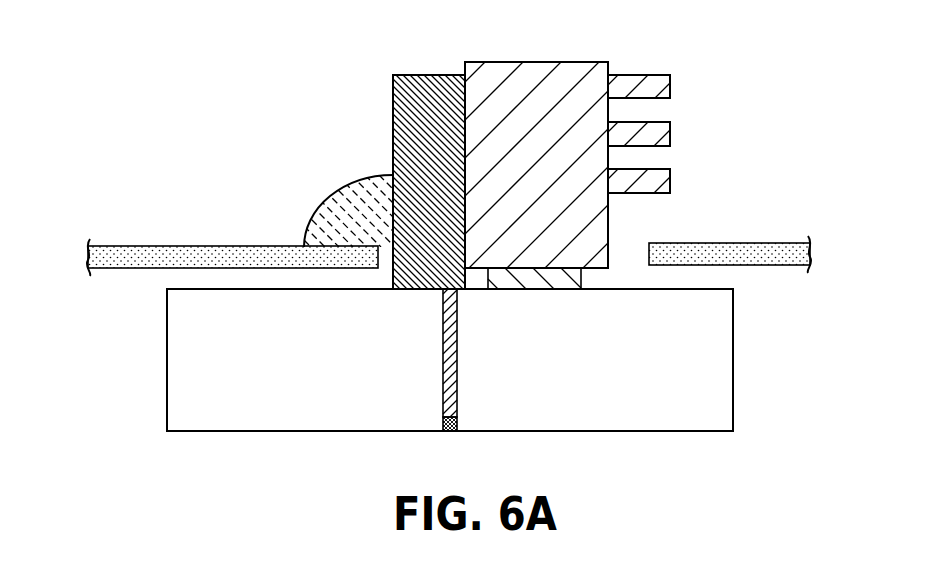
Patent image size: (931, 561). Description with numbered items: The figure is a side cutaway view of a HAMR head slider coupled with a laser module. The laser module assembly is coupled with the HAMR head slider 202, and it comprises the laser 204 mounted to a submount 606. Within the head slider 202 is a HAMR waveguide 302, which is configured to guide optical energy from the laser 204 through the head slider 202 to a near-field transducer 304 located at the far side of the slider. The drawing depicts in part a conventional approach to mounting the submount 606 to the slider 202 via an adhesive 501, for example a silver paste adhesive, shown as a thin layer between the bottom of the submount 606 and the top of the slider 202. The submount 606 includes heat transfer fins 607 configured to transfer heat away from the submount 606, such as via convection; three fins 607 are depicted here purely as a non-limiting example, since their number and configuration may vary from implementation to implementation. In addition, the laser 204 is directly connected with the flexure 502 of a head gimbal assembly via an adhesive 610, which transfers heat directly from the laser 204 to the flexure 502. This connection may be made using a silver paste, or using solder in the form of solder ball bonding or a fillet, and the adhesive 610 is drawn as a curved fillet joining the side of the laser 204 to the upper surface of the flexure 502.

The HAMR head slider 202 is at (711, 326).
The laser 204 is at (393, 98).
The HAMR waveguide 302 is at (443, 365).
The near-field transducer 304 is at (450, 432).
The adhesive 501 is at (525, 292).
The flexure 502 is at (132, 260).
The submount 606 is at (537, 82).
The heat transfer fins 607 is at (679, 67).
The adhesive 610 is at (332, 198).